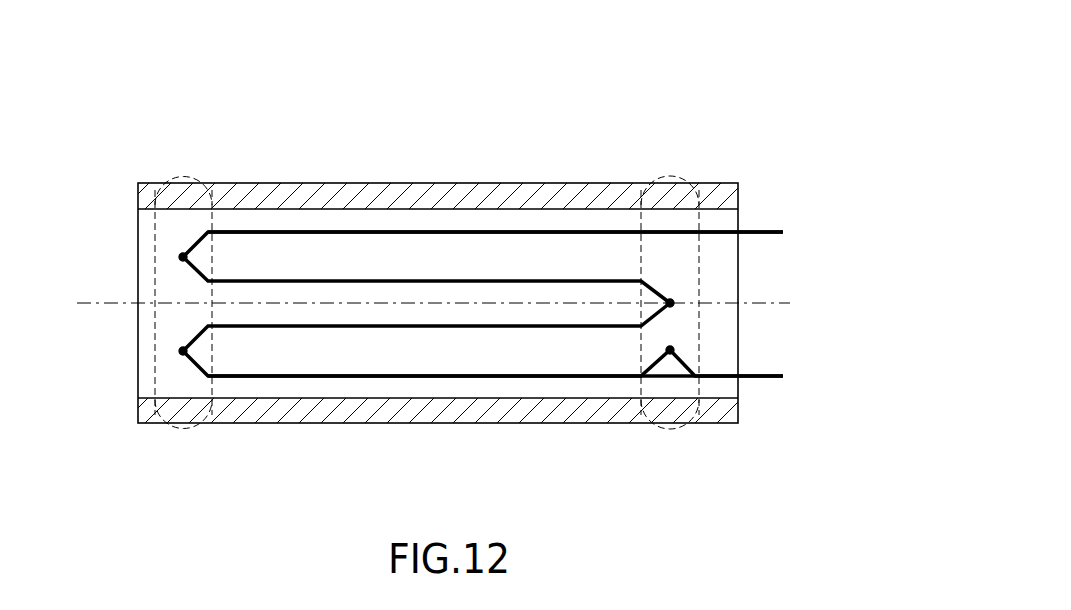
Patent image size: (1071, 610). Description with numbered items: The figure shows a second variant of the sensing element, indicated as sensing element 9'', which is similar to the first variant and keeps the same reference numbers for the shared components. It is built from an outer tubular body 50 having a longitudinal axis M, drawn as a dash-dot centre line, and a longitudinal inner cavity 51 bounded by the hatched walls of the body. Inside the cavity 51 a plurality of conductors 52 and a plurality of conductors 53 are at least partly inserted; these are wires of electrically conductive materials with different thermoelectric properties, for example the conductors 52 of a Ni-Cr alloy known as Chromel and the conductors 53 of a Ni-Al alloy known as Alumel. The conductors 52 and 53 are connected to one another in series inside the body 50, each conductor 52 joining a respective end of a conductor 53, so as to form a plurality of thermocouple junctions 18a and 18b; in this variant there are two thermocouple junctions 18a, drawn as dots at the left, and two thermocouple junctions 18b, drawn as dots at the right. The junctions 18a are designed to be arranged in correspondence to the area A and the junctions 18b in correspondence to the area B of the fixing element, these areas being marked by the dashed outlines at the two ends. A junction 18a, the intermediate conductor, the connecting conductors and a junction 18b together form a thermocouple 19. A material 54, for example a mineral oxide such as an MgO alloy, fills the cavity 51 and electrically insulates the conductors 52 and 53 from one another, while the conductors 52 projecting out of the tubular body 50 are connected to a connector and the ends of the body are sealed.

The sensing element 9'' is at (743, 85).
The thermocouple junction 18a is at (181, 257).
The thermocouple junction 18b is at (674, 301).
The thermocouple 19 is at (548, 259).
The outer tubular body 50 is at (521, 193).
The longitudinal inner cavity 51 is at (290, 214).
The conductor 52 is at (425, 231).
The conductor 53 is at (433, 279).
The material 54 is at (345, 218).
The area A is at (183, 432).
The area B is at (657, 432).
The longitudinal axis M is at (105, 305).